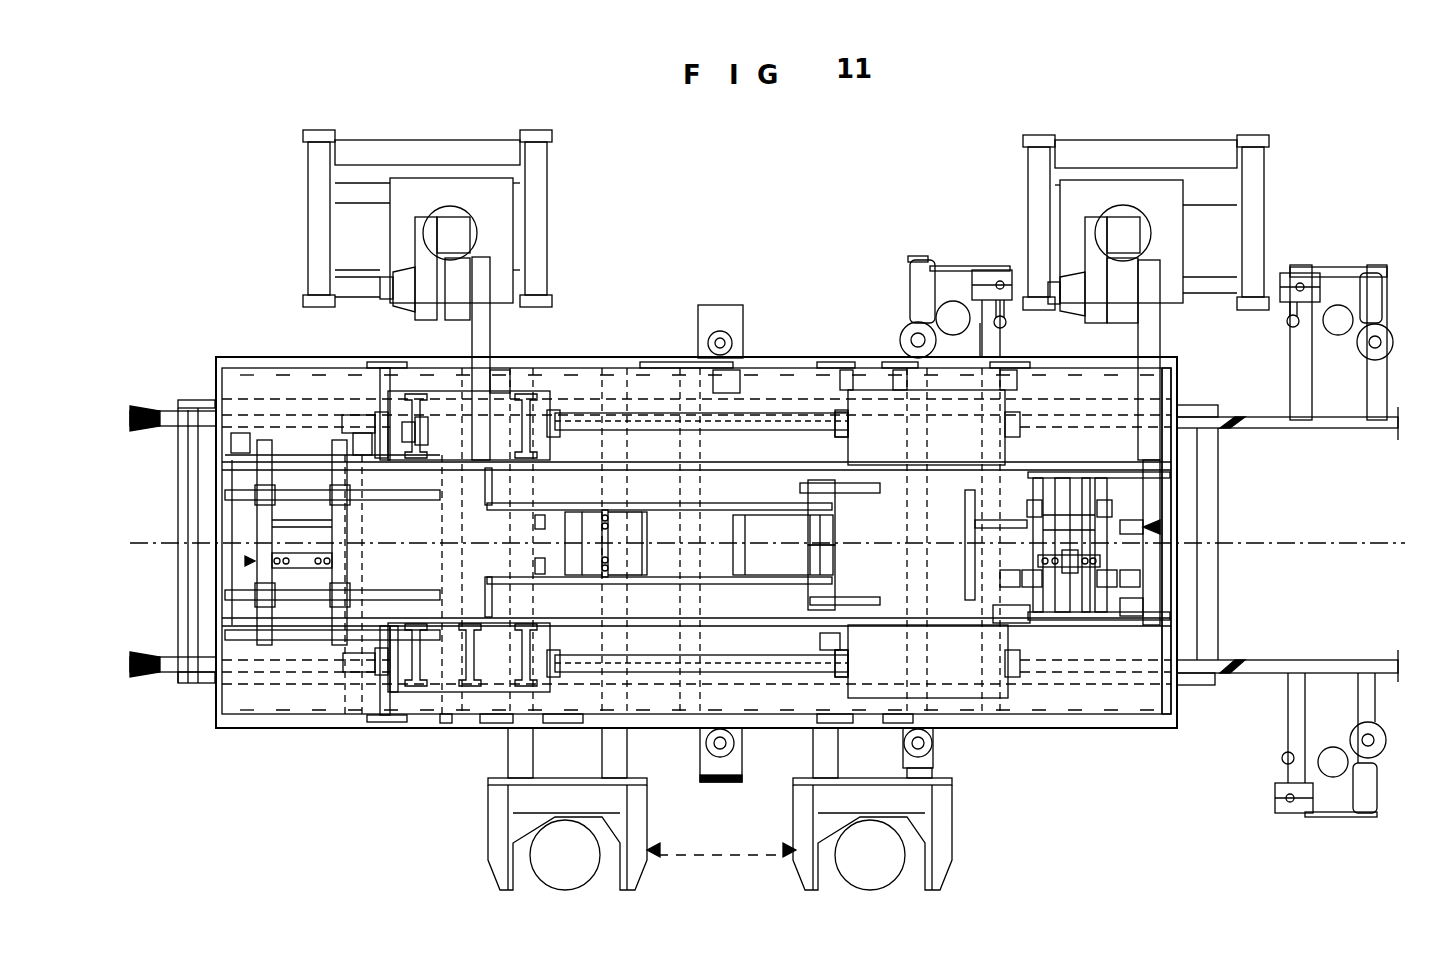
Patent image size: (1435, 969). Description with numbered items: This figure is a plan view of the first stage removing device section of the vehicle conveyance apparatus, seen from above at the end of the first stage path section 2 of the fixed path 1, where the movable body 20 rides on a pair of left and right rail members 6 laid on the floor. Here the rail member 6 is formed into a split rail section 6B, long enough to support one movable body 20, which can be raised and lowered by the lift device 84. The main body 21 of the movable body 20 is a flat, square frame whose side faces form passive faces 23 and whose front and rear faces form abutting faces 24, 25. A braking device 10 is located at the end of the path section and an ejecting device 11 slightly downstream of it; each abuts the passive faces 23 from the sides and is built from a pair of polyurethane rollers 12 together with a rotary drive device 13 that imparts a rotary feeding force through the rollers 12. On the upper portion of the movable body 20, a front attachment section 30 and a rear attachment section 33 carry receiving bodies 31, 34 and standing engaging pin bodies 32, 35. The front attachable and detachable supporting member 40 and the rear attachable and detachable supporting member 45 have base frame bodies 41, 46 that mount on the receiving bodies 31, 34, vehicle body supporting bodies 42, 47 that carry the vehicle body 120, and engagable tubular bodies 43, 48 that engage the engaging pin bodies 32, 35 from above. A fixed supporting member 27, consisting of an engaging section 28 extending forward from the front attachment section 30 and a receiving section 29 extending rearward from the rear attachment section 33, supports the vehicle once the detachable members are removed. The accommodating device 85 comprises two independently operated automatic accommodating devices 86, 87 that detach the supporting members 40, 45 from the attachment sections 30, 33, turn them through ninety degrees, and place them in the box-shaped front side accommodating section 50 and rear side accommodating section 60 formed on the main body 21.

The fixed path 1 is at (1330, 535).
The first stage path section 2 is at (1292, 545).
The rail member 6 is at (1345, 668).
The split rail section 6B is at (197, 393).
The braking device 10 is at (1386, 245).
The ejecting device 11 is at (935, 232).
The rollers 12 is at (905, 330).
The rotary drive device 13 is at (905, 265).
The movable body 20 is at (1126, 745).
The main body 21 is at (234, 730).
The passive faces 23 is at (605, 348).
The abutting face 24 is at (192, 684).
The abutting face 25 is at (1180, 700).
The fixed supporting member 27 is at (446, 718).
The engaging section 28 is at (568, 355).
The receiving section 29 is at (880, 435).
The front attachment section 30 is at (650, 733).
The receiving bodies 31 is at (653, 542).
The engaging pin bodies 32 is at (625, 490).
The rear attachment section 33 is at (752, 735).
The receiving bodies 34 is at (885, 610).
The engaging pin bodies 35 is at (857, 512).
The front attachable and detachable supporting member 40 is at (168, 572).
The base frame body 41 is at (253, 468).
The vehicle body supporting body 42 is at (160, 463).
The engagable tubular body 43 is at (370, 560).
The rear attachable and detachable supporting member 45 is at (1180, 513).
The base frame body 46 is at (1102, 622).
The vehicle body supporting body 47 is at (1180, 573).
The engagable tubular body 48 is at (1062, 622).
The front side accommodating section 50 is at (262, 385).
The rear side accommodating section 60 is at (1165, 477).
The lift device 84 is at (721, 871).
The accommodating device 85 is at (1292, 150).
The automatic accommodating device 86 is at (395, 140).
The automatic accommodating device 87 is at (1085, 142).
The vehicle body 120 is at (282, 722).